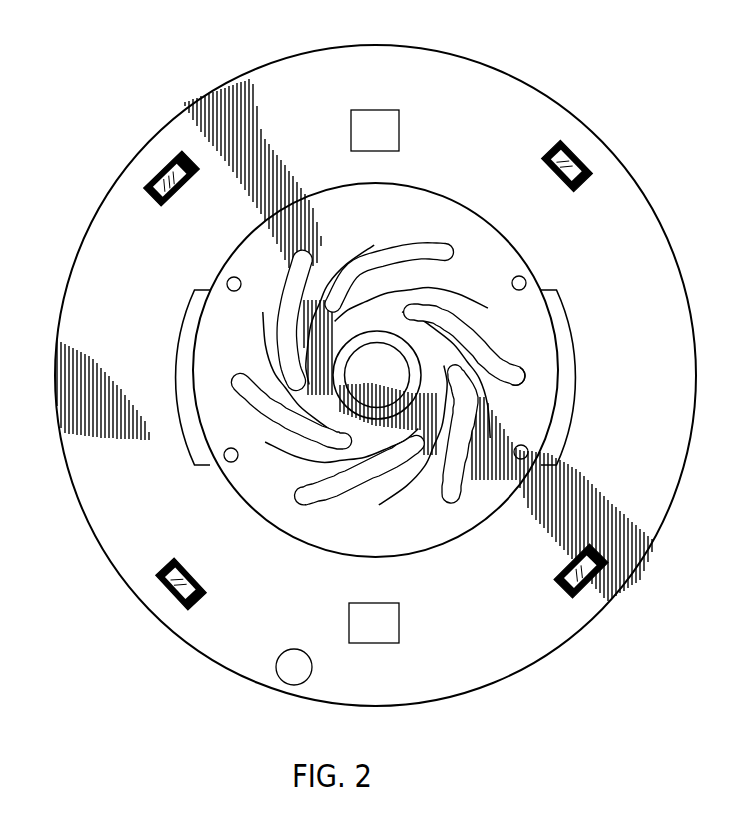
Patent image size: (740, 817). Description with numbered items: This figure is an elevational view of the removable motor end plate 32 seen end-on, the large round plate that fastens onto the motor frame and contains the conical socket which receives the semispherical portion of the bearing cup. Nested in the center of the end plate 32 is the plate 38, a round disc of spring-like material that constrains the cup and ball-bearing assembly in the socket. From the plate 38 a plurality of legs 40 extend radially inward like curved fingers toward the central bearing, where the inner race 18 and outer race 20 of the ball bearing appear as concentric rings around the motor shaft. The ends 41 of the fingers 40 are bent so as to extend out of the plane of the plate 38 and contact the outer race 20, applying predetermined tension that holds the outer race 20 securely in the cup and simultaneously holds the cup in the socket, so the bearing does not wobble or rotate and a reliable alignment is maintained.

The inner race 18 is at (294, 379).
The outer race 20 is at (405, 305).
The removable motor end plate 32 is at (433, 50).
The plate 38 is at (422, 189).
The legs 40 is at (498, 383).
The ends 41 is at (418, 314).